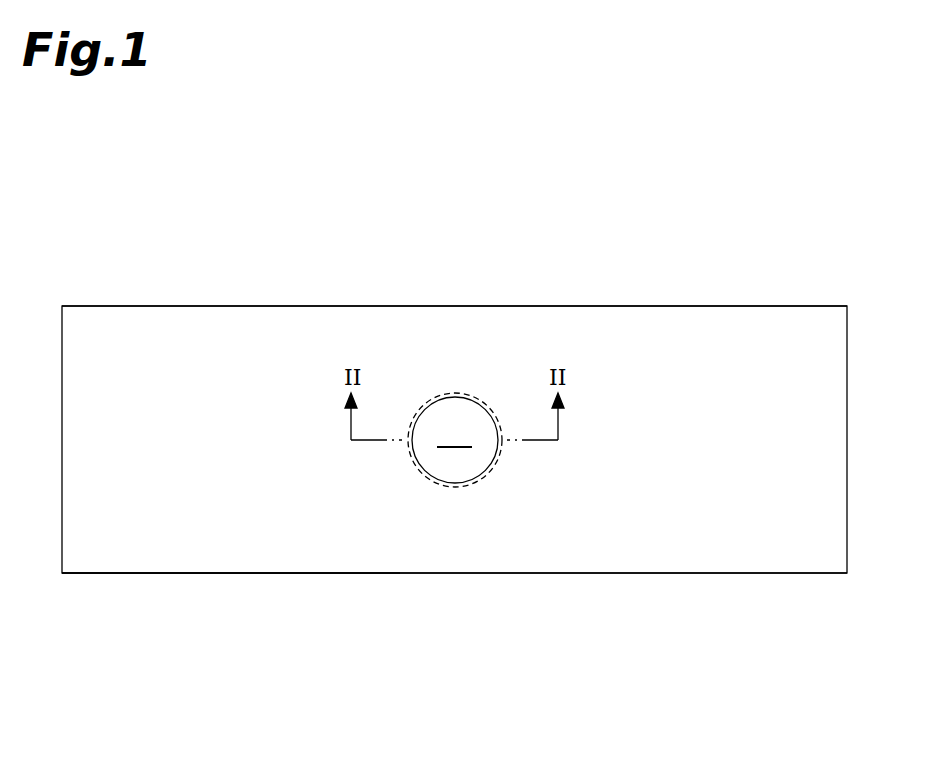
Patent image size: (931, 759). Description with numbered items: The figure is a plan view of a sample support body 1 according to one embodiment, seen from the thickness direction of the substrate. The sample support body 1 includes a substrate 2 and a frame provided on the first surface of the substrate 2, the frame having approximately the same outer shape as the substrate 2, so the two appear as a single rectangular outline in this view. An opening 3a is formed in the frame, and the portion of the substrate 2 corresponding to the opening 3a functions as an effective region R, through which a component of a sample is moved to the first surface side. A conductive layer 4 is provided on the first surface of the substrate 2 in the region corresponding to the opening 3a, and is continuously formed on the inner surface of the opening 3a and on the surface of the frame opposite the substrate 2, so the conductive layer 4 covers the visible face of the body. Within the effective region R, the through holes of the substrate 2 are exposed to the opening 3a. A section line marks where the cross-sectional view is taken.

The sample support body 1 is at (698, 222).
The substrate 2 is at (678, 573).
The opening 3a is at (447, 482).
The conductive layer 4 is at (225, 318).